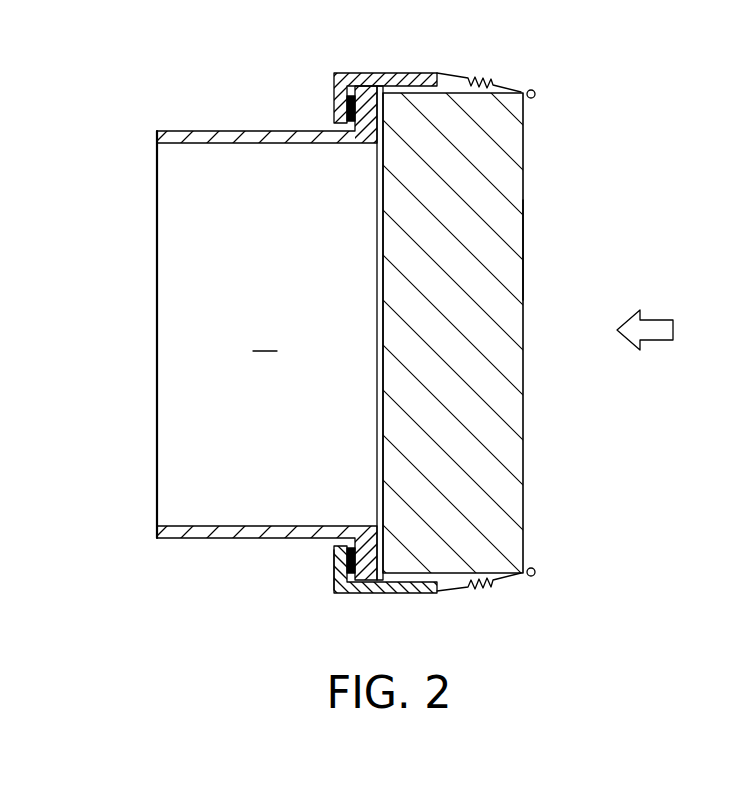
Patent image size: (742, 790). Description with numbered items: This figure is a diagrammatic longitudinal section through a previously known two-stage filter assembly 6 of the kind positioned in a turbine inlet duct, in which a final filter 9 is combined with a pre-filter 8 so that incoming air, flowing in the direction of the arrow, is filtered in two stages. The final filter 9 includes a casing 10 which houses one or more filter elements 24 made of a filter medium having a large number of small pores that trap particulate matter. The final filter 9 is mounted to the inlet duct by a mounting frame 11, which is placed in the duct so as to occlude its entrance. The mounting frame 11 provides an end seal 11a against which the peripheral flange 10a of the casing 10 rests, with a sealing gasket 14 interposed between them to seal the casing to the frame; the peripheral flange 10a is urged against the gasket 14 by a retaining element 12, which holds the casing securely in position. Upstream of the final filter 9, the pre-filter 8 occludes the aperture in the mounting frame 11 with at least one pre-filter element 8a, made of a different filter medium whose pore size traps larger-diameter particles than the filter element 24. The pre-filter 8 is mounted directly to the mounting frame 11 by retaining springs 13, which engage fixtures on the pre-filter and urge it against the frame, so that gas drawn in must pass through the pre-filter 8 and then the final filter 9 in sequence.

The filter assembly 6 is at (302, 603).
The pre-filter 8 is at (542, 160).
The pre-filter element 8a is at (510, 256).
The final filter 9 is at (167, 258).
The casing 10 is at (200, 131).
The peripheral flange 10a is at (366, 106).
The mounting frame 11 is at (343, 594).
The end seal 11a is at (340, 556).
The retaining element 12 is at (383, 583).
The retaining springs 13 is at (483, 75).
The sealing gasket 14 is at (349, 110).
The filter element 24 is at (264, 339).